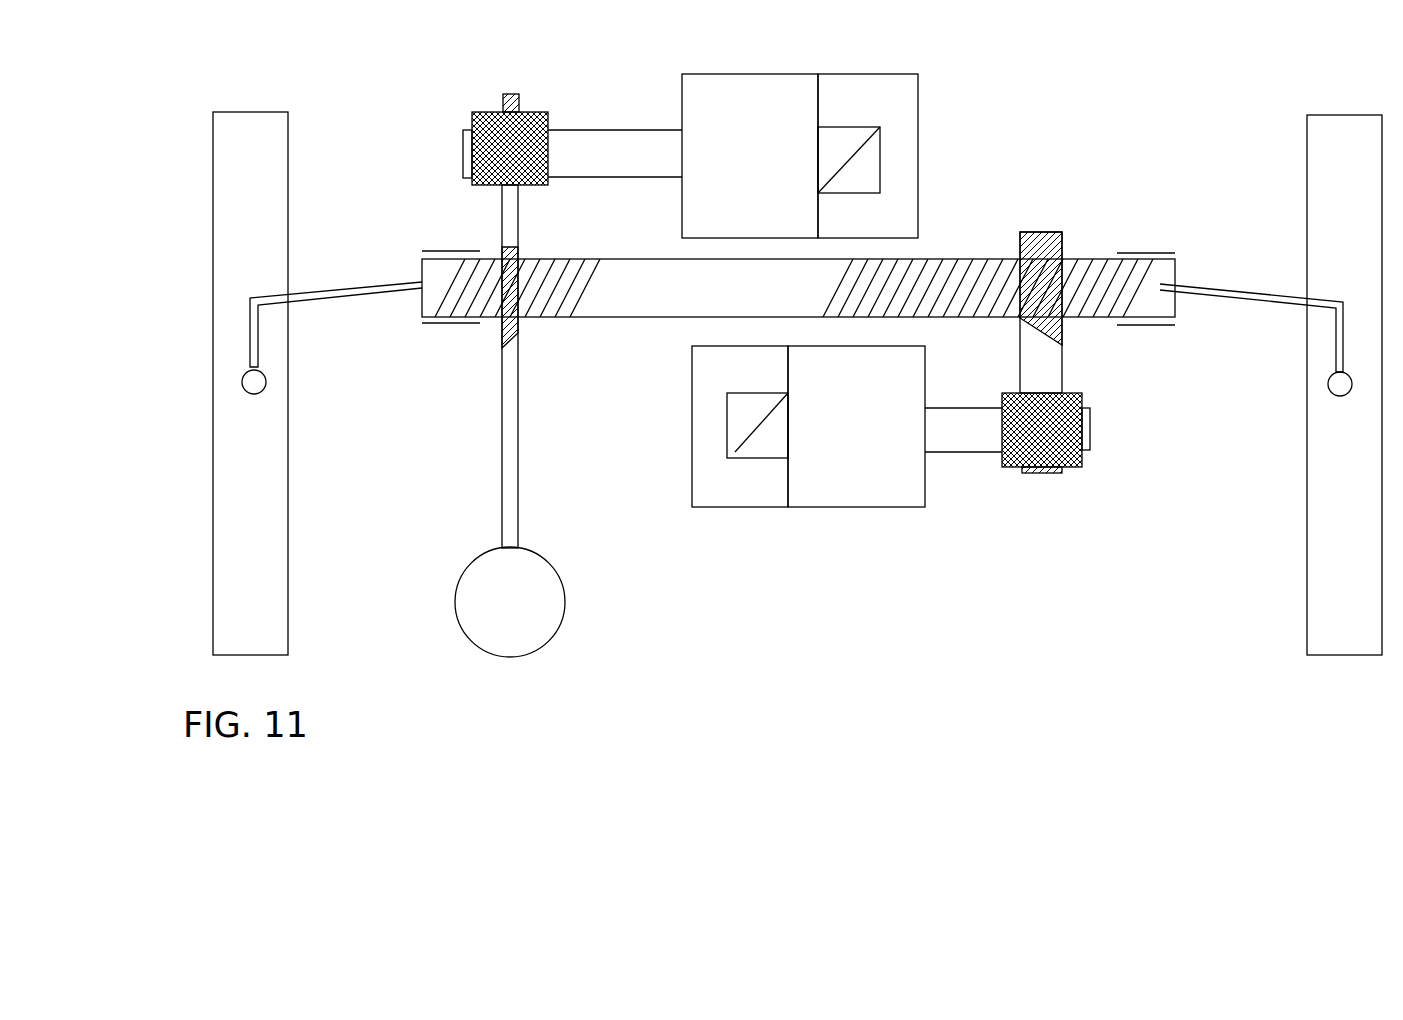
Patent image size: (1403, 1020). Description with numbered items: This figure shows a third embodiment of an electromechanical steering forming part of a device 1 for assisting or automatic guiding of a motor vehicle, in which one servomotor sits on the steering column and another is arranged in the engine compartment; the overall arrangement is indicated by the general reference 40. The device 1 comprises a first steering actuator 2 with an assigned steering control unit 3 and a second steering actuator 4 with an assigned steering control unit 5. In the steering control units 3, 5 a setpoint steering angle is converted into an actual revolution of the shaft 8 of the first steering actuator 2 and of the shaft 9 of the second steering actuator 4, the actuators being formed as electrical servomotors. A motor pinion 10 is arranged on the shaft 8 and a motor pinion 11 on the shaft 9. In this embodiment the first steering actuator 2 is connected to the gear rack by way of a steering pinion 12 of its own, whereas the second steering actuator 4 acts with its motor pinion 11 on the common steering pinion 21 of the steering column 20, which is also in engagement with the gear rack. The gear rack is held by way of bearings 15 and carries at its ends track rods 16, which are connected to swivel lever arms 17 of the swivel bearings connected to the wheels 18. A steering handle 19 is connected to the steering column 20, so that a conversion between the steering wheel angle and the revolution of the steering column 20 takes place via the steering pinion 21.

The device 1 is at (993, 98).
The arrangement 40 is at (1120, 73).
The first steering actuator 2 is at (860, 492).
The steering control unit 3 is at (747, 492).
The second steering actuator 4 is at (755, 98).
The steering control unit 5 is at (868, 100).
The shaft 8 is at (970, 432).
The shaft 9 is at (624, 152).
The motor pinion 10 is at (1040, 460).
The motor pinion 11 is at (525, 110).
The steering pinion 12 is at (1060, 322).
The bearings 15 is at (455, 250).
The track rods 16 is at (367, 288).
The swivel lever arms 17 is at (257, 345).
The wheels 18 is at (260, 450).
The steering handle 19 is at (537, 632).
The steering column 20 is at (512, 458).
The steering pinion 21 is at (512, 330).